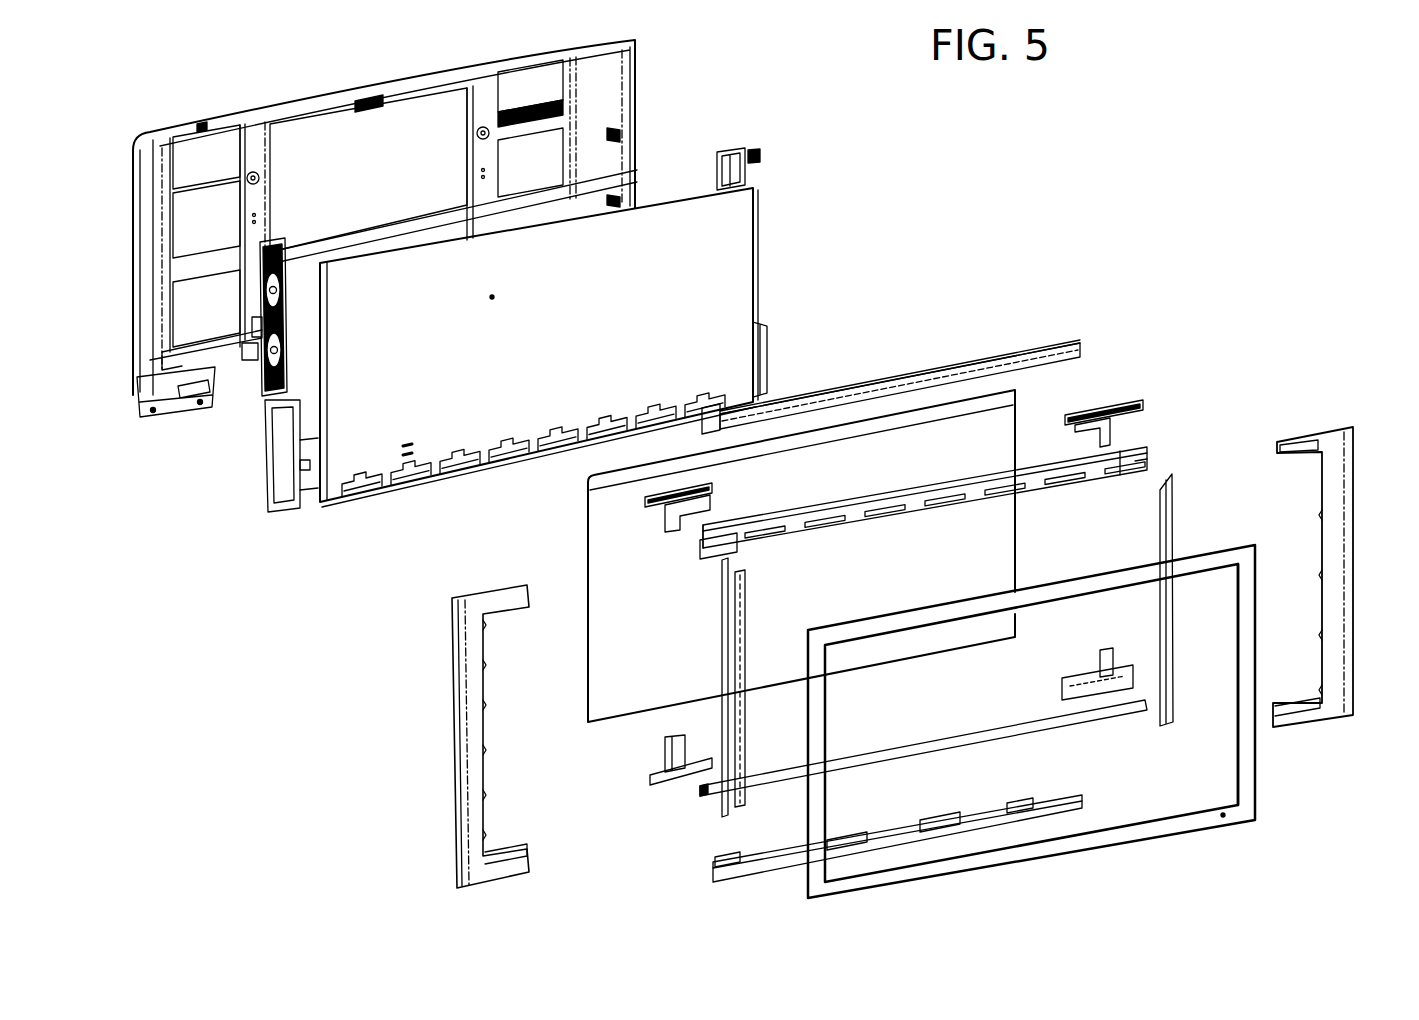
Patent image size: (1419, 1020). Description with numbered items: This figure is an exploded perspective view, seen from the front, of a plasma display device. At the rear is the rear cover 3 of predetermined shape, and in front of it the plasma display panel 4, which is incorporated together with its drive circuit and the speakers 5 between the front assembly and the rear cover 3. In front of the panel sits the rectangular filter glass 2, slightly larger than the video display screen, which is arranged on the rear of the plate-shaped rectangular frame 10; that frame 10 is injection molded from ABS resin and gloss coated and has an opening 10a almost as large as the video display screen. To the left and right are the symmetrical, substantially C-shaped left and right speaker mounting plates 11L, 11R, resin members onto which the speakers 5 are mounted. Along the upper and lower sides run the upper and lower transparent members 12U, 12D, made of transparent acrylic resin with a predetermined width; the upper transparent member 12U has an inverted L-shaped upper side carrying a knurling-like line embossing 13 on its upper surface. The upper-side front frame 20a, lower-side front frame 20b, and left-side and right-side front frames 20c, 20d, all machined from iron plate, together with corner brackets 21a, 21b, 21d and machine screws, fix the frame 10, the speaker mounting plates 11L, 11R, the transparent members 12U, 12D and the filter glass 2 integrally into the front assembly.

The filter glass 2 is at (990, 412).
The rear cover 3 is at (608, 107).
The plasma display panel 4 is at (730, 258).
The speakers 5 is at (753, 157).
The frame 10 is at (1140, 830).
The opening 10a is at (1192, 765).
The left speaker mounting plate 11L is at (465, 783).
The right speaker mounting plate 11R is at (1335, 593).
The upper transparent member 12U is at (990, 358).
The lower transparent member 12D is at (770, 870).
The line embossing 13 is at (883, 375).
The upper-side front frame 20a is at (1023, 468).
The lower-side front frame 20b is at (1003, 738).
The left-side front frame 20c is at (1077, 672).
The right-side front frame 20d is at (1165, 530).
The corner bracket 21a is at (1122, 415).
The corner bracket 21b is at (672, 520).
The corner bracket 21d is at (668, 790).